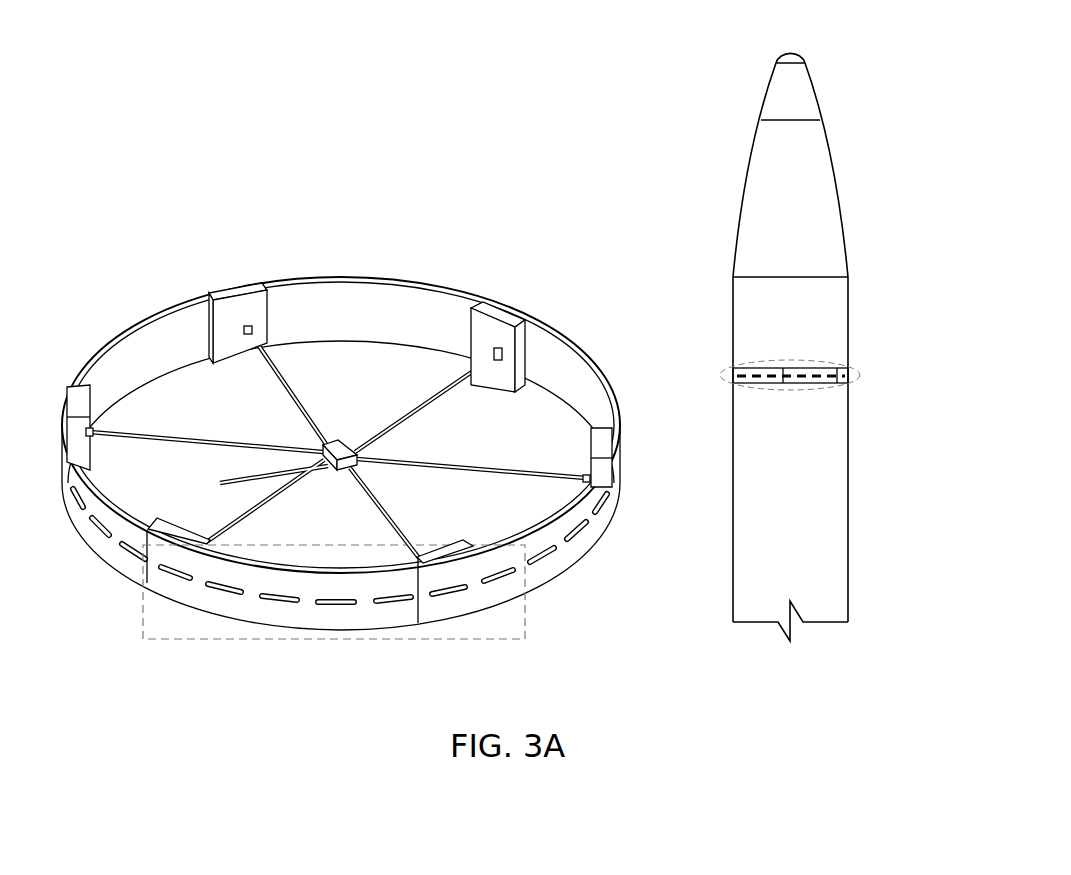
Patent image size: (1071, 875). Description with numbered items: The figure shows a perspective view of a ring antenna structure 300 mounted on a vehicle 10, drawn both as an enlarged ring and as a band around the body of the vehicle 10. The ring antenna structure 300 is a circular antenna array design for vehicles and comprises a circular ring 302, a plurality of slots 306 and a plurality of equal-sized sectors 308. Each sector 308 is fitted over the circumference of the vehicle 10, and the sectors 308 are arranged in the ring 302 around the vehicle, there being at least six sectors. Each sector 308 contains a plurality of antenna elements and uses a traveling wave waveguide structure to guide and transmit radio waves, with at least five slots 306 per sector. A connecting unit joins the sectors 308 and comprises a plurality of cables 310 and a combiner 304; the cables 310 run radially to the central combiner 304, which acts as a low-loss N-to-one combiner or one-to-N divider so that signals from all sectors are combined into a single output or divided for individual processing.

The vehicle 10 is at (714, 65).
The ring antenna structure 300 is at (166, 266).
The circular ring 302 is at (553, 330).
The combiner 304 is at (348, 446).
The slots 306 is at (250, 605).
The sectors 308 is at (394, 642).
The cable 310 is at (340, 442).